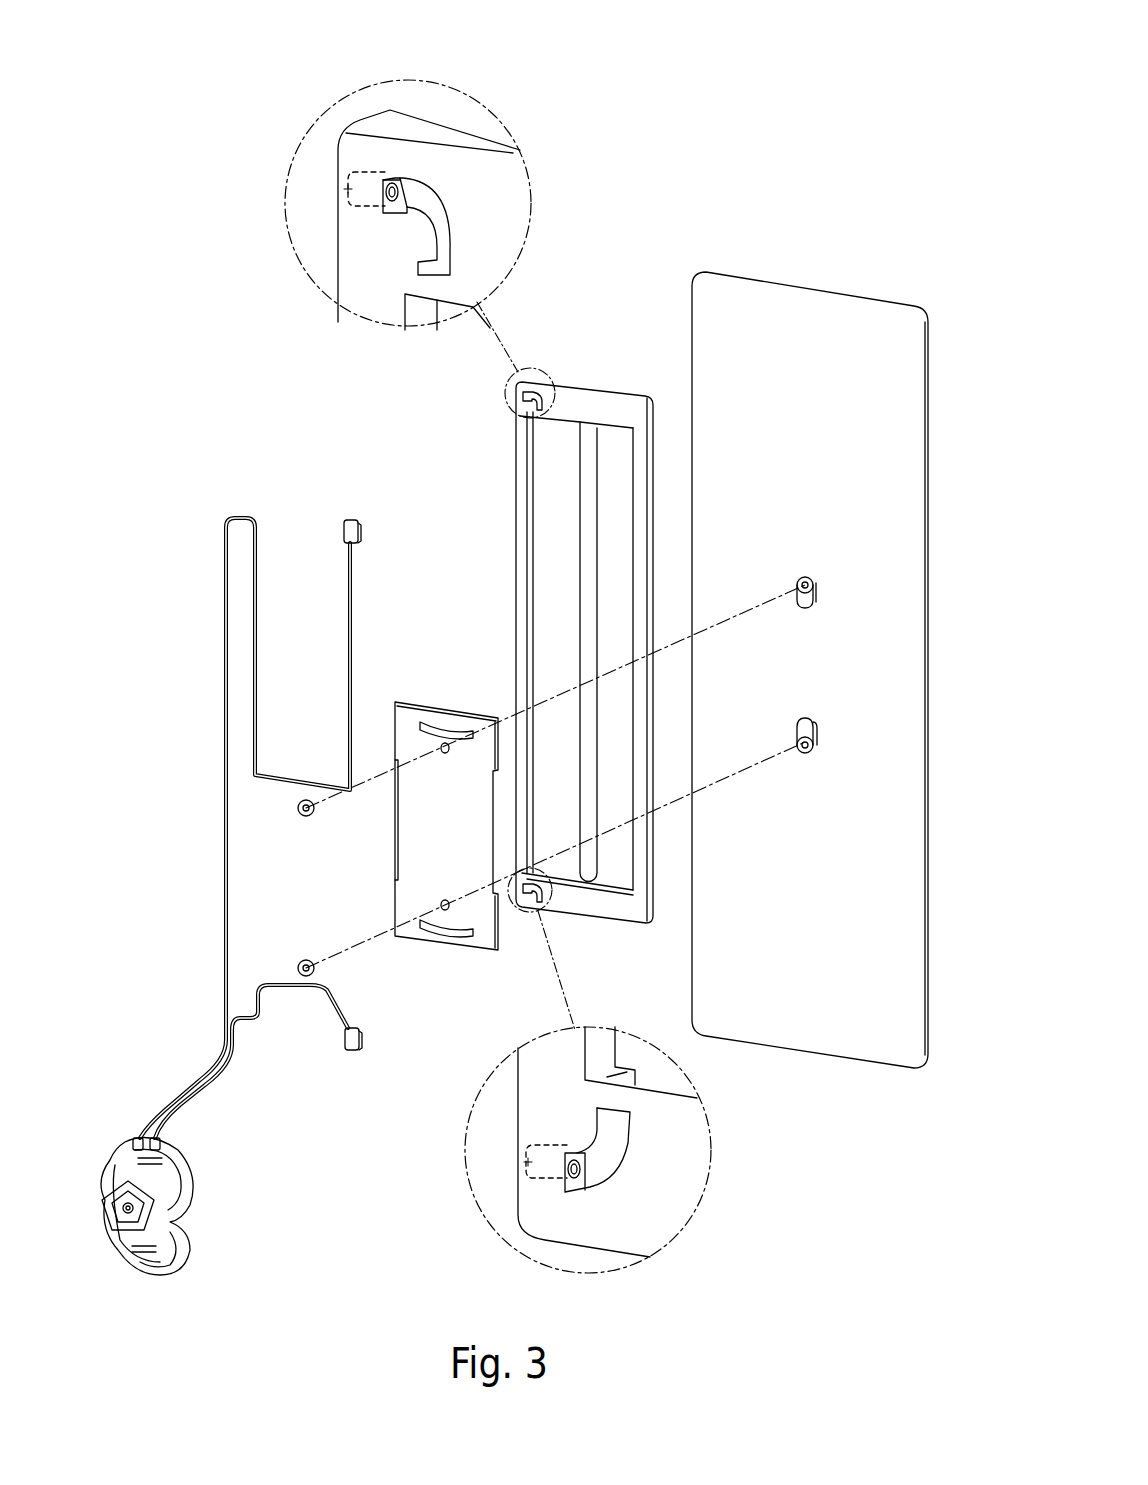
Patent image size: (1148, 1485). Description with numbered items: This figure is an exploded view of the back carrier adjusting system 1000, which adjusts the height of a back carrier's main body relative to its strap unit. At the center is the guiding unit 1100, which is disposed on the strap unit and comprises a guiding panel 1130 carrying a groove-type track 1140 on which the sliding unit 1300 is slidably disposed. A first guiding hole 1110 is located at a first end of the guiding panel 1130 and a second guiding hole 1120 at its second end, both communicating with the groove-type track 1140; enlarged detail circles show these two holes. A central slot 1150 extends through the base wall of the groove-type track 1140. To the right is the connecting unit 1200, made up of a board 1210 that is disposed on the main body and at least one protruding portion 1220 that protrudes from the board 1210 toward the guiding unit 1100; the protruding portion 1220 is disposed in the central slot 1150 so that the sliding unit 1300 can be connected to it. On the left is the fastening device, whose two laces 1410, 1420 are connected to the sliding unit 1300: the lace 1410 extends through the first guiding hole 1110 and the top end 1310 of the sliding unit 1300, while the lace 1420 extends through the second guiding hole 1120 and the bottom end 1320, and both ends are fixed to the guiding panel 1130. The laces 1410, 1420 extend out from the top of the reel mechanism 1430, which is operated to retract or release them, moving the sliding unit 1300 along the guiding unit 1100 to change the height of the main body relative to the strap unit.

The back carrier adjusting system 1000 is at (174, 43).
The guiding unit 1100 is at (622, 240).
The first guiding hole 1110 is at (345, 185).
The second guiding hole 1120 is at (524, 1162).
The guiding panel 1130 is at (644, 457).
The groove-type track 1140 is at (614, 443).
The central slot 1150 is at (585, 442).
The connecting unit 1200 is at (810, 596).
The board 1210 is at (716, 272).
The protruding portion 1220 is at (806, 580).
The sliding unit 1300 is at (403, 762).
The top end 1310 is at (457, 713).
The bottom end 1320 is at (385, 775).
The lace 1410 is at (224, 617).
The lace 1420 is at (293, 988).
The reel mechanism 1430 is at (117, 1167).